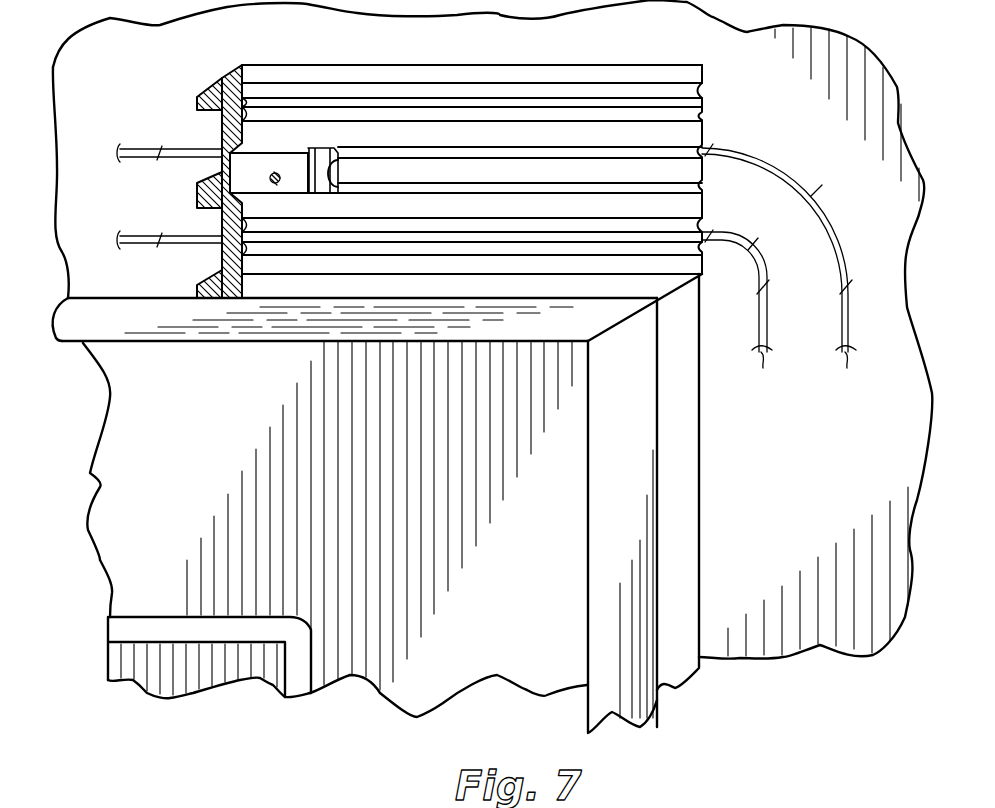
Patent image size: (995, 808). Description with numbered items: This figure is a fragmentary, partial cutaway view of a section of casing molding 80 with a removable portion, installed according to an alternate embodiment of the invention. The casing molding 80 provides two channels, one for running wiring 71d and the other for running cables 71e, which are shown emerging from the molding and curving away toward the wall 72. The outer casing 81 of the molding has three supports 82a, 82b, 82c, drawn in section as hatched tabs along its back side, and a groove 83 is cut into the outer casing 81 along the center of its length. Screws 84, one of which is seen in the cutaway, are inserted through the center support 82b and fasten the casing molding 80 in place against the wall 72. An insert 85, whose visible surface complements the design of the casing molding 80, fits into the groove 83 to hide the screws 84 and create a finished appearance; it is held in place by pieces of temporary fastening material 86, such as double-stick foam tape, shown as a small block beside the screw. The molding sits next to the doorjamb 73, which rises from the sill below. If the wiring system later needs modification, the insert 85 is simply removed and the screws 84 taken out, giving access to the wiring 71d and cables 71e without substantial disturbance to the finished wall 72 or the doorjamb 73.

The casing molding 80 is at (429, 216).
The outer casing 81 is at (703, 82).
The support 82a is at (198, 92).
The center support 82b is at (198, 193).
The support 82c is at (198, 284).
The groove 83 is at (222, 148).
The screws 84 is at (270, 172).
The insert 85 is at (370, 158).
The temporary fastening material 86 is at (320, 168).
The wiring 71d is at (780, 273).
The cables 71e is at (738, 316).
The wall 72 is at (823, 486).
The doorjamb 73 is at (588, 568).